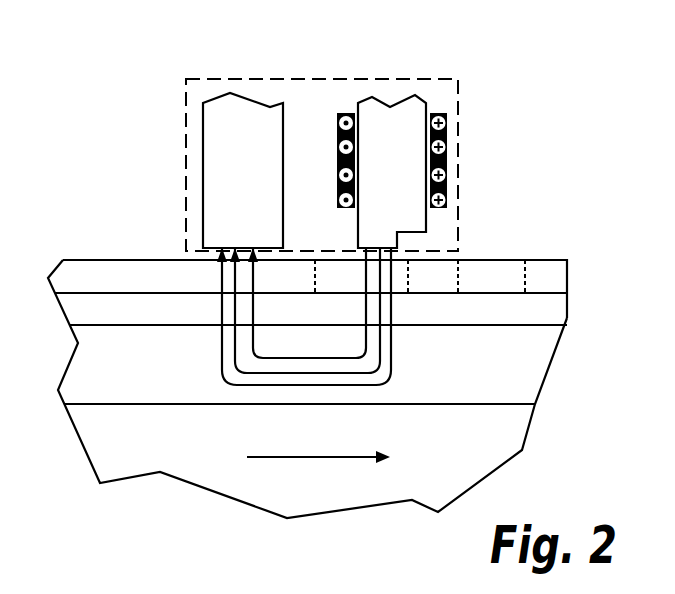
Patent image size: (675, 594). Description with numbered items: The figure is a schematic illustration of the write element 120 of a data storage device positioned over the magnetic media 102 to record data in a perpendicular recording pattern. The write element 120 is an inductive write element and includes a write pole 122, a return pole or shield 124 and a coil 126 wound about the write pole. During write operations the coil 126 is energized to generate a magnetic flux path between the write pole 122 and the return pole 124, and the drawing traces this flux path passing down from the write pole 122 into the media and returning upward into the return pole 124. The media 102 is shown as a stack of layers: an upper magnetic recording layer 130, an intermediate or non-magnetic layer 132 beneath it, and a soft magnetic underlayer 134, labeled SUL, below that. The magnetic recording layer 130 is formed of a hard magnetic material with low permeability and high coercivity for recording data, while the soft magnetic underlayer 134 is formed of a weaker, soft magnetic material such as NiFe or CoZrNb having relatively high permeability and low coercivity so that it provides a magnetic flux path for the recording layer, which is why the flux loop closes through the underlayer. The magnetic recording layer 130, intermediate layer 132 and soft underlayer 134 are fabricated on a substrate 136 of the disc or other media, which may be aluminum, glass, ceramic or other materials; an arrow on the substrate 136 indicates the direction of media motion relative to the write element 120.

The media 102 is at (551, 179).
The write element 120 is at (322, 80).
The write pole 122 is at (417, 97).
The return pole 124 is at (244, 90).
The coil 126 is at (447, 123).
The magnetic recording layer 130 is at (542, 278).
The intermediate layer 132 is at (545, 309).
The soft magnetic underlayer 134 is at (503, 365).
The substrate 136 is at (467, 463).